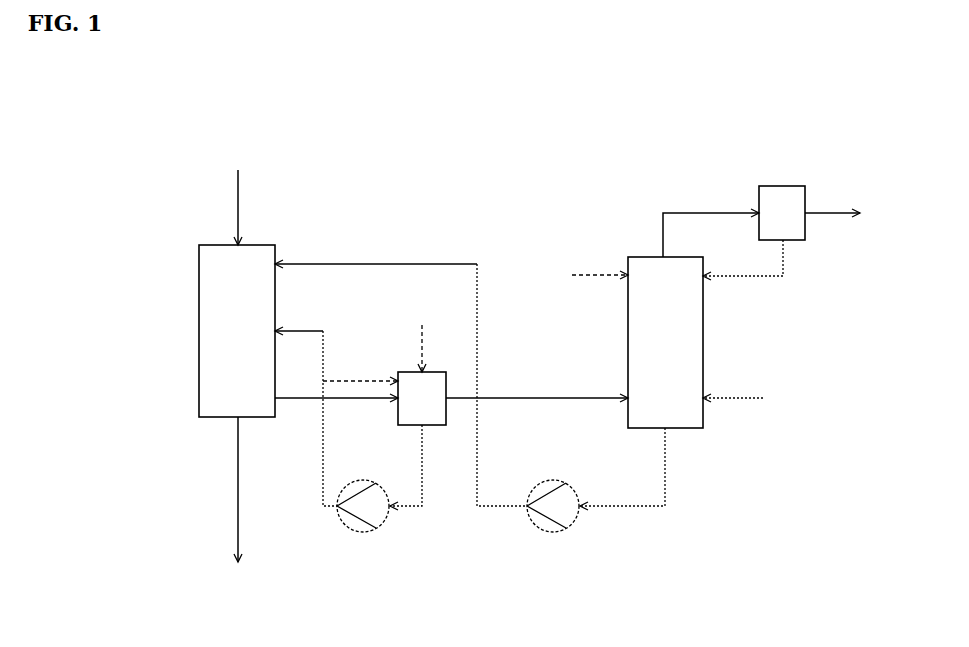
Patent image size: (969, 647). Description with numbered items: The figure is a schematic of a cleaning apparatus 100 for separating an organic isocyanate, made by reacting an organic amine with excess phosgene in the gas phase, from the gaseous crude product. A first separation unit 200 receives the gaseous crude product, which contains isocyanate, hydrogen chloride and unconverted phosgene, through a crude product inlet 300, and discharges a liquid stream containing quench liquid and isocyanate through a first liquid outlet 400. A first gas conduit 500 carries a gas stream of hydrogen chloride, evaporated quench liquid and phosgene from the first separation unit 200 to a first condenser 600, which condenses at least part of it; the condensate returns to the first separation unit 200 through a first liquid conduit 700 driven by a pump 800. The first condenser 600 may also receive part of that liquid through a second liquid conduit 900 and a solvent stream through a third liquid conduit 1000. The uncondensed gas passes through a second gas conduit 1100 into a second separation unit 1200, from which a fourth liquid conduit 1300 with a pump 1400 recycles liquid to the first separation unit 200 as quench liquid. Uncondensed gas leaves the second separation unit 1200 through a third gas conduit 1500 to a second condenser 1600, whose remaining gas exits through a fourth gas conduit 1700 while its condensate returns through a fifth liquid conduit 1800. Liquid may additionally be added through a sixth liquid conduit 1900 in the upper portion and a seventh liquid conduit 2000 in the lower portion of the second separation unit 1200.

The cleaning apparatus 100 is at (508, 222).
The first separation unit 200 is at (237, 331).
The crude product inlet 300 is at (252, 207).
The first liquid outlet 400 is at (249, 489).
The first gas conduit 500 is at (336, 389).
The first condenser 600 is at (422, 398).
The first liquid conduit 700 is at (306, 408).
The pump 800 is at (379, 478).
The second liquid conduit 900 is at (360, 373).
The third liquid conduit 1000 is at (438, 348).
The second gas conduit 1100 is at (537, 390).
The second separation unit 1200 is at (665, 342).
The fourth liquid conduit 1300 is at (489, 377).
The pump 1400 is at (553, 506).
The third gas conduit 1500 is at (711, 225).
The second condenser 1600 is at (782, 213).
The fourth gas conduit 1700 is at (832, 205).
The fifth liquid conduit 1800 is at (743, 260).
The sixth liquid conduit 1900 is at (600, 267).
The seventh liquid conduit 2000 is at (733, 390).